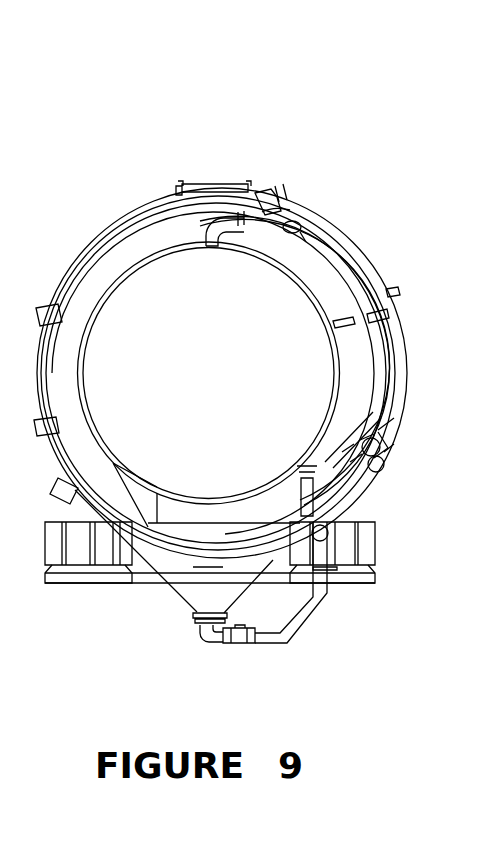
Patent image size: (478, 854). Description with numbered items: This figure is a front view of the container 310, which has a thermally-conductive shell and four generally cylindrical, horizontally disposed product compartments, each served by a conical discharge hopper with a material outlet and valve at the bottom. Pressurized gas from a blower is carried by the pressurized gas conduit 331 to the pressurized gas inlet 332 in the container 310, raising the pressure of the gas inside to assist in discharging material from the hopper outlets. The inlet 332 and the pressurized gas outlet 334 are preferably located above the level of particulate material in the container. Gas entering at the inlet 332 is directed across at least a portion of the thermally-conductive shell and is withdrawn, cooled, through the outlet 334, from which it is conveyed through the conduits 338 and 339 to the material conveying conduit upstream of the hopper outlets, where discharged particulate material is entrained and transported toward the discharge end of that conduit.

The container 310 is at (262, 107).
The pressurized gas conduit 331 is at (358, 367).
The pressurized gas inlet 332 is at (222, 233).
The pressurized gas outlet 334 is at (265, 190).
The conduit 338 is at (360, 242).
The conduit 339 is at (300, 618).